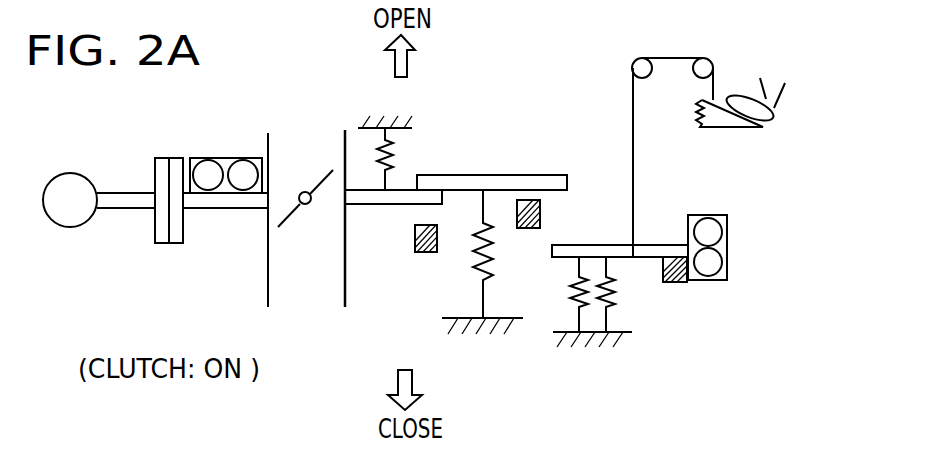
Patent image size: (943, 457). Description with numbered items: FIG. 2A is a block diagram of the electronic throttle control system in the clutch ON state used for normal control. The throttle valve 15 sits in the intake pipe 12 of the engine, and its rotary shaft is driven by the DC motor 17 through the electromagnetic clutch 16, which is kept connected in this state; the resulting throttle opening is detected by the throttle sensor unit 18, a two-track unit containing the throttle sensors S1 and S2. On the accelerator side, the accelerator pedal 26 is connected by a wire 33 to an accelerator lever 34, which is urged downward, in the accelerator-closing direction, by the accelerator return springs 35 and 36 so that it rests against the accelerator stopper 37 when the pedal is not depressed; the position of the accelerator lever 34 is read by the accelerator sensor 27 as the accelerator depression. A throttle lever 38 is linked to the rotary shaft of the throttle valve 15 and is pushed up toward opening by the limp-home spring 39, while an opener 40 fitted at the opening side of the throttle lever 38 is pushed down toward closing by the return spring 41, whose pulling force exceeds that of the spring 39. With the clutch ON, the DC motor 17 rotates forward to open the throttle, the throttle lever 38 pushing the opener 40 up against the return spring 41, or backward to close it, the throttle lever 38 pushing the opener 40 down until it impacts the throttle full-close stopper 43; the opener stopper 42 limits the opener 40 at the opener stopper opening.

The intake pipe 12 is at (265, 238).
The throttle valve 15 is at (322, 168).
The electromagnetic clutch 16 is at (155, 241).
The DC motor 17 is at (69, 228).
The throttle sensor unit 18 is at (228, 157).
The accelerator pedal 26 is at (718, 102).
The accelerator sensor 27 is at (728, 250).
The wire 33 is at (672, 58).
The accelerator lever 34 is at (607, 245).
The accelerator return spring 35 is at (570, 291).
The accelerator return spring 36 is at (617, 293).
The accelerator stopper 37 is at (677, 283).
The throttle lever 38 is at (363, 206).
The spring for limp-home running 39 is at (395, 158).
The opener 40 is at (530, 175).
The return spring 41 is at (468, 272).
The opener stopper 42 is at (541, 213).
The throttle full-close stopper 43 is at (415, 250).